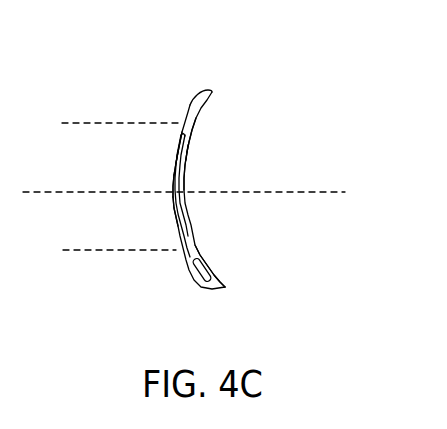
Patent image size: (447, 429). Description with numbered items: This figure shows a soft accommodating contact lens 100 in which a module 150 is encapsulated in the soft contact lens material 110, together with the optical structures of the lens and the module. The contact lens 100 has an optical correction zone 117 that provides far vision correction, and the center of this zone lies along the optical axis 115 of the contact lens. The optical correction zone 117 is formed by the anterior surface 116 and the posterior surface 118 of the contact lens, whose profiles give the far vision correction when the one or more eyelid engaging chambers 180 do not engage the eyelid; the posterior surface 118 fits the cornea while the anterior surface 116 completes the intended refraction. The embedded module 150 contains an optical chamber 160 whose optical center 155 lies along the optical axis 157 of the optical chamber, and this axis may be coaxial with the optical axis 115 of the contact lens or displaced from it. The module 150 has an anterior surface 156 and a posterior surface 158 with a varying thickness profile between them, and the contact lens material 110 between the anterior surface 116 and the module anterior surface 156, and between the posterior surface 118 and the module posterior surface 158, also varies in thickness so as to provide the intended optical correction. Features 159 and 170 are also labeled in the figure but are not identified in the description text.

The soft accommodating contact lens 100 is at (206, 77).
The soft contact lens material 110 is at (195, 93).
The optical axis of the contact lens 115 is at (43, 193).
The anterior surface of the contact lens 116 is at (174, 150).
The optical correction zone 117 is at (93, 122).
The posterior surface of the contact lens 118 is at (184, 152).
The module 150 is at (224, 144).
The optical center of the module 155 is at (166, 184).
The anterior surface of the module 156 is at (178, 140).
The optical axis of the optical chamber 157 is at (122, 193).
The posterior surface of the module 158 is at (203, 138).
The bend 159 is at (171, 195).
The optical chamber 160 is at (186, 205).
The tip portion 170 is at (196, 248).
The eyelid engaging chambers 180 is at (203, 279).